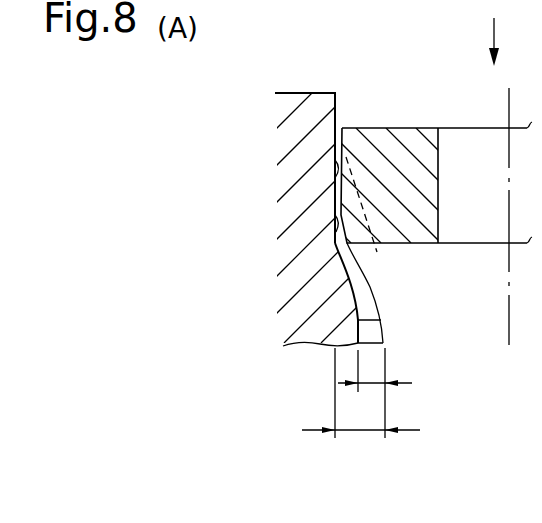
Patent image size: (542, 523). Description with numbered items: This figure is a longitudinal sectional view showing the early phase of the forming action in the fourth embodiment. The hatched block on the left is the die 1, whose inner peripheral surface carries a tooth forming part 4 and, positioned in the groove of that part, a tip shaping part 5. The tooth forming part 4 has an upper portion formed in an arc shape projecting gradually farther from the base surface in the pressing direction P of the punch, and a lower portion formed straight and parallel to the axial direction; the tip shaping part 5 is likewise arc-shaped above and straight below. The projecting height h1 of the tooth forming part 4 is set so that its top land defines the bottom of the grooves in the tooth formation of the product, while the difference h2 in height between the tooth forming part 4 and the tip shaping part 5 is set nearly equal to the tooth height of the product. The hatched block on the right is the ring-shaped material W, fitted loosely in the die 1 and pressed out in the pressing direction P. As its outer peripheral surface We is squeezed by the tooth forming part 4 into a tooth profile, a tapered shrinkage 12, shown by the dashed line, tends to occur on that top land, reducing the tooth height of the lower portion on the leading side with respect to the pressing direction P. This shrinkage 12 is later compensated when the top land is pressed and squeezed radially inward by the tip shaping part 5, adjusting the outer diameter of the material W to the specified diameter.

The die 1 is at (298, 117).
The tooth forming part 4 is at (373, 285).
The tip shaping part 5 is at (360, 320).
The ring-shaped material W is at (375, 133).
The outer peripheral surface We is at (338, 178).
The tapered shrinkage 12 is at (337, 231).
The pressing direction P is at (470, 42).
The projecting height h1 is at (358, 432).
The difference in height h2 is at (370, 386).